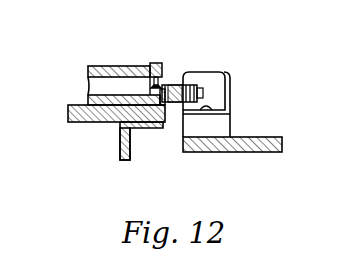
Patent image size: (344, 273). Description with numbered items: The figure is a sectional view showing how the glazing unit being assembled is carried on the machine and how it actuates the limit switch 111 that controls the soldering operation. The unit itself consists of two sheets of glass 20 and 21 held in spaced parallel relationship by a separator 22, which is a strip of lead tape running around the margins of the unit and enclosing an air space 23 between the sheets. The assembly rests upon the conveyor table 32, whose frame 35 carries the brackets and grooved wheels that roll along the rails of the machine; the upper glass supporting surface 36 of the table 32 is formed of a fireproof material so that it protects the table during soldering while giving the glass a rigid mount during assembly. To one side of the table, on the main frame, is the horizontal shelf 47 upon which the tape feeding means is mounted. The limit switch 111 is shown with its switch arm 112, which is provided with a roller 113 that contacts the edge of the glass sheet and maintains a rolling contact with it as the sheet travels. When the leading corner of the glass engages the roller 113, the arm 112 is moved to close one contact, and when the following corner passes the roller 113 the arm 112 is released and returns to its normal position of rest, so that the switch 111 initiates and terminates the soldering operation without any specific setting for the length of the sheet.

The glass sheet 20 is at (130, 52).
The glass sheet 21 is at (98, 101).
The separator 22 is at (155, 72).
The air space 23 is at (108, 89).
The conveyor table 32 is at (107, 123).
The frame 35 is at (122, 151).
The glass supporting surface 36 is at (95, 118).
The horizontal shelf 47 is at (261, 137).
The limit switch 111 is at (217, 71).
The switch arm 112 is at (203, 93).
The roller 113 is at (171, 92).